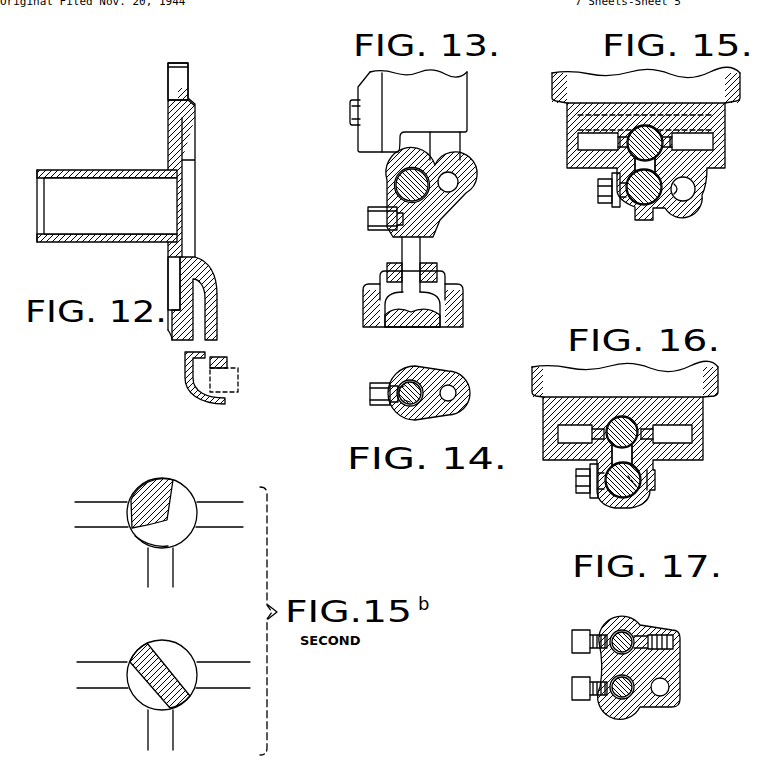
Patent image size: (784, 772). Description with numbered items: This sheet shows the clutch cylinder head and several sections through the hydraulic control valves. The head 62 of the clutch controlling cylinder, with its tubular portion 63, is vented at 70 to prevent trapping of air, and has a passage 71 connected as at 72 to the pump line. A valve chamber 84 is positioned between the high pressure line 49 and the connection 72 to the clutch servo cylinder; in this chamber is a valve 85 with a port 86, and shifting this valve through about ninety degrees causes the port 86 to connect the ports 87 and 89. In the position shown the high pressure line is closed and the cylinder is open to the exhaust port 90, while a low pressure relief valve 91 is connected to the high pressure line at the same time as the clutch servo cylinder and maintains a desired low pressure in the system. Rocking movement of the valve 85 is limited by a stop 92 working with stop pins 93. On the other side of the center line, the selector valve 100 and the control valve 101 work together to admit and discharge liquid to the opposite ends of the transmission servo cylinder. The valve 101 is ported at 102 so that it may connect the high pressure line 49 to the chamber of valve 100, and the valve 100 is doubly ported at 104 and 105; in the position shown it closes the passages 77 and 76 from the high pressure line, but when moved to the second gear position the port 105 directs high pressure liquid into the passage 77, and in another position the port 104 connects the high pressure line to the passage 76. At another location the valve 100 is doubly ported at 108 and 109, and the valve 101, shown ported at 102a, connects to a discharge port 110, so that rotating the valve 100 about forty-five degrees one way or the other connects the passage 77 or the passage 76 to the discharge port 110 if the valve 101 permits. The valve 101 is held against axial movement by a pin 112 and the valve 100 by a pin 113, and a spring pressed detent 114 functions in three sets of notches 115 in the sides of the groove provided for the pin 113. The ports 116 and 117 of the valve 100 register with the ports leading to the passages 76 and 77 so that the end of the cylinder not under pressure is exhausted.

In FIG. 12, the head of the cylinder 62 is at (190, 154).
In FIG. 12, the tubular sleeve 63 is at (115, 172).
In FIG. 12, the vent 70 is at (196, 118).
In FIG. 12, the passage 71 is at (205, 318).
In FIG. 12, the connection 72 is at (238, 368).
In FIG. 13, the connection 72 is at (376, 230).
In FIG. 13, the valve chamber 84 is at (393, 168).
In FIG. 13, the valve 85 is at (432, 162).
In FIG. 13, the port 86 is at (400, 190).
In FIG. 13, the port 87 is at (457, 163).
In FIG. 13, the port 89 is at (430, 240).
In FIG. 13, the exhaust port 90 is at (387, 187).
In FIG. 13, the low pressure relief valve 91 is at (453, 289).
In FIG. 13, the high pressure line 49 is at (450, 183).
In FIG. 14, the high pressure line 49 is at (450, 392).
In FIG. 15, the high pressure line 49 is at (685, 192).
In FIG. 14, the stop 92 is at (388, 380).
In FIG. 14, the stop pins 93 is at (422, 380).
In FIG. 15, the passage 76 is at (707, 140).
In FIG. 16, the passage 76 is at (682, 435).
In FIG. 15, the passage 77 is at (587, 145).
In FIG. 16, the passage 77 is at (573, 435).
In FIG. 15, the selector valve 100 is at (648, 127).
In FIG. 16, the selector valve 100 is at (627, 420).
In FIG. 17, the selector valve 100 is at (620, 628).
In FIG. 15, the control valve 101 is at (630, 212).
In FIG. 16, the control valve 101 is at (602, 498).
In FIG. 17, the control valve 101 is at (623, 697).
In FIG. 15, the port 102 is at (705, 176).
In FIG. 16, the lower ball 102a is at (640, 502).
In FIG. 15, the port 104 is at (670, 127).
In FIG. 15B, the port 104 is at (180, 653).
In FIG. 15, the port 105 is at (626, 124).
In FIG. 15B, the port 105 is at (145, 697).
In FIG. 16, the port 108 is at (642, 420).
In FIG. 16, the port 109 is at (608, 420).
In FIG. 16, the discharge port 110 is at (655, 483).
In FIG. 17, the pin 112 is at (598, 708).
In FIG. 17, the pin 113 is at (602, 622).
In FIG. 17, the spring pressed detent 114 is at (662, 618).
In FIG. 17, the notches 115 is at (650, 627).
In FIG. 15B, the port 116 is at (178, 498).
In FIG. 15B, the port 117 is at (147, 537).